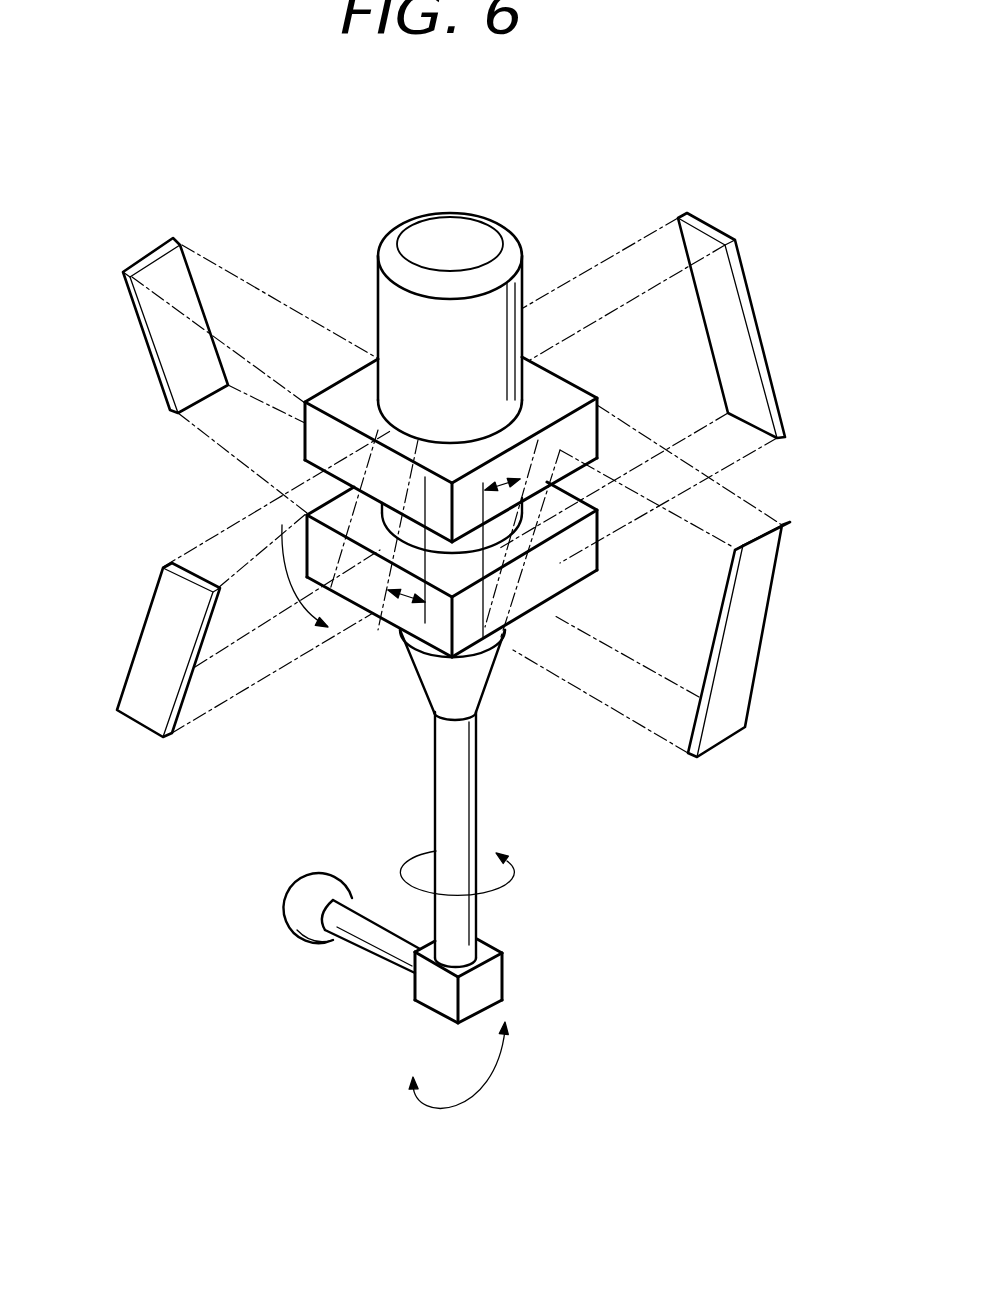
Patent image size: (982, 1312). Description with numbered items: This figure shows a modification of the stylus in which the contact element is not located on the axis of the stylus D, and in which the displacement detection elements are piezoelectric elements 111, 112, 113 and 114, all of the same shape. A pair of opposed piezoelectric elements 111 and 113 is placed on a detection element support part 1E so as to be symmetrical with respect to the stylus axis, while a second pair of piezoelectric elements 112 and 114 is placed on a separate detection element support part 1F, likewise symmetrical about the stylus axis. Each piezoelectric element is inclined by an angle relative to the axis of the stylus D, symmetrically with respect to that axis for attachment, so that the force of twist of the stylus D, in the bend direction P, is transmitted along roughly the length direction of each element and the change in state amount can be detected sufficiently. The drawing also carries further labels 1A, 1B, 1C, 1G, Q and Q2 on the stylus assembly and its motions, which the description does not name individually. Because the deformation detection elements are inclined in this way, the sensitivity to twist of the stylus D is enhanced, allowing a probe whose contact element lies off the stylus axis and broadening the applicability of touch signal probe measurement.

The piezoelectric element 111 is at (775, 582).
The piezoelectric element 112 is at (745, 280).
The piezoelectric element 113 is at (148, 253).
The piezoelectric element 114 is at (143, 627).
The stylus ball 1A is at (297, 917).
The stylus arm 1B is at (393, 960).
The stylus holder block 1C is at (503, 980).
The detection element support part 1E is at (345, 368).
The detection element support part 1F is at (312, 437).
The tapered shaft portion 1G is at (462, 547).
The stylus D is at (470, 800).
The rotation direction about shaft axis Q is at (504, 887).
The rotation direction of block Q2 is at (303, 610).
The bend direction P is at (487, 1092).